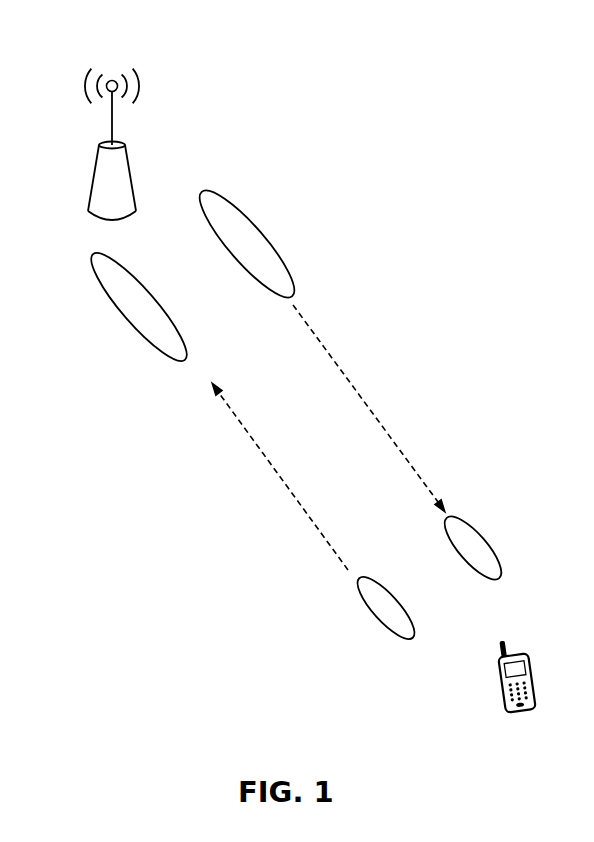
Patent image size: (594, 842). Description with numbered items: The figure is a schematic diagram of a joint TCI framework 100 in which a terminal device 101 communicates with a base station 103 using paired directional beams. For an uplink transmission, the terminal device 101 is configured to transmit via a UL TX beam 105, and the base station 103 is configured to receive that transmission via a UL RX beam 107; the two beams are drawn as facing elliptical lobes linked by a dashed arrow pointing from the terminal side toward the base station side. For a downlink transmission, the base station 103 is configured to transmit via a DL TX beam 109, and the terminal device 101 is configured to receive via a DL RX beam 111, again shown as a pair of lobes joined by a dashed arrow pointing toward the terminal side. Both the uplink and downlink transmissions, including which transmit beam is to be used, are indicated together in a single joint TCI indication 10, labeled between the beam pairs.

The joint TCI framework 100 is at (558, 172).
The terminal device 101 is at (534, 675).
The base station 103 is at (110, 119).
The UL TX beam 105 is at (386, 615).
The UL RX beam 107 is at (117, 307).
The DL TX beam 109 is at (247, 238).
The DL RX beam 111 is at (477, 545).
The joint TCI indication 10 is at (328, 437).